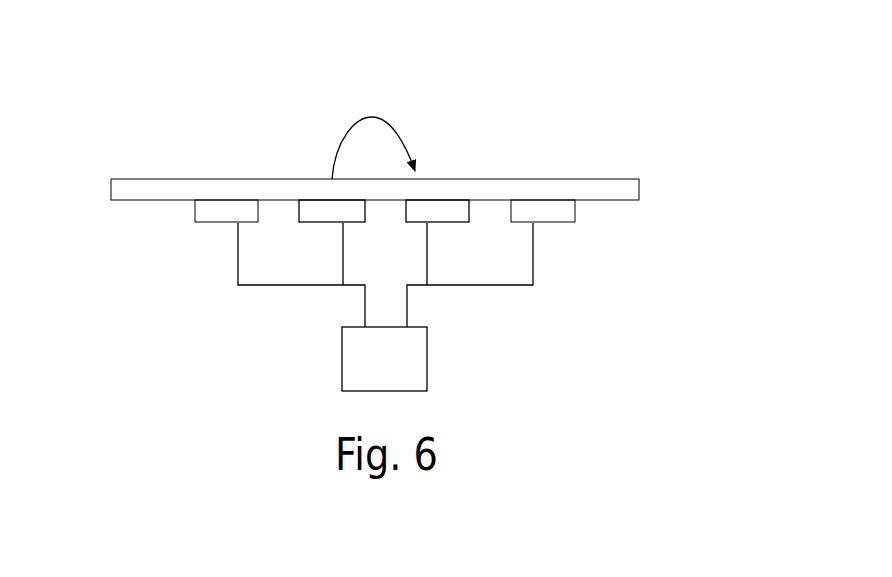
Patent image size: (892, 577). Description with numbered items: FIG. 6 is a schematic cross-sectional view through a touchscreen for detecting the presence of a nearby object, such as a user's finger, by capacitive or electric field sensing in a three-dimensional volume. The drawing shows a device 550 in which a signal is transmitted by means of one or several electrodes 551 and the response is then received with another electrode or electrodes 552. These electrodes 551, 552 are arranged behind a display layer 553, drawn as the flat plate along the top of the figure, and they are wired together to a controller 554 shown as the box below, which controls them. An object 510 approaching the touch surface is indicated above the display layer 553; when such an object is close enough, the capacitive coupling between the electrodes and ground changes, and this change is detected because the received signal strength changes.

The droplet 510 is at (380, 117).
The device 550 is at (112, 111).
The electrodes 551 is at (229, 200).
The electrode 552 is at (544, 220).
The display layer 553 is at (639, 200).
The controller 554 is at (427, 367).